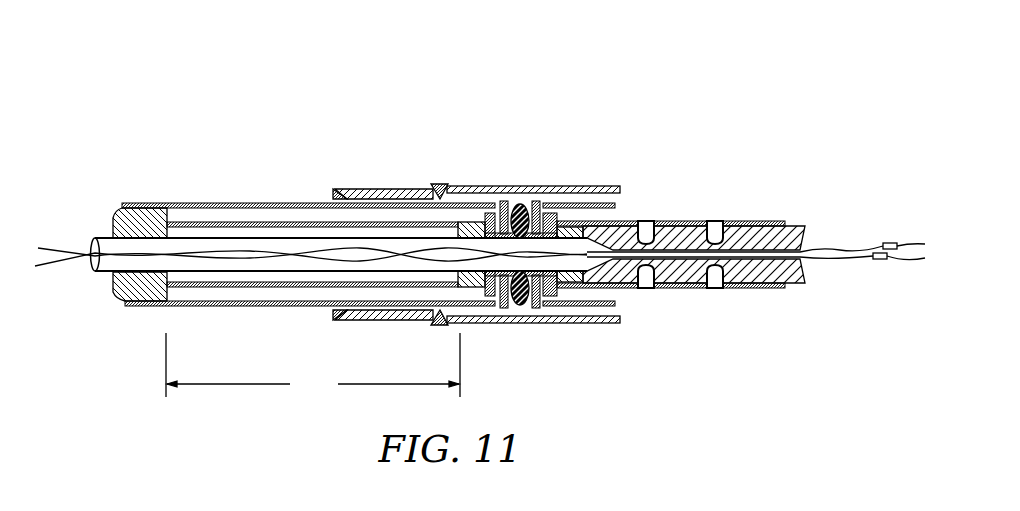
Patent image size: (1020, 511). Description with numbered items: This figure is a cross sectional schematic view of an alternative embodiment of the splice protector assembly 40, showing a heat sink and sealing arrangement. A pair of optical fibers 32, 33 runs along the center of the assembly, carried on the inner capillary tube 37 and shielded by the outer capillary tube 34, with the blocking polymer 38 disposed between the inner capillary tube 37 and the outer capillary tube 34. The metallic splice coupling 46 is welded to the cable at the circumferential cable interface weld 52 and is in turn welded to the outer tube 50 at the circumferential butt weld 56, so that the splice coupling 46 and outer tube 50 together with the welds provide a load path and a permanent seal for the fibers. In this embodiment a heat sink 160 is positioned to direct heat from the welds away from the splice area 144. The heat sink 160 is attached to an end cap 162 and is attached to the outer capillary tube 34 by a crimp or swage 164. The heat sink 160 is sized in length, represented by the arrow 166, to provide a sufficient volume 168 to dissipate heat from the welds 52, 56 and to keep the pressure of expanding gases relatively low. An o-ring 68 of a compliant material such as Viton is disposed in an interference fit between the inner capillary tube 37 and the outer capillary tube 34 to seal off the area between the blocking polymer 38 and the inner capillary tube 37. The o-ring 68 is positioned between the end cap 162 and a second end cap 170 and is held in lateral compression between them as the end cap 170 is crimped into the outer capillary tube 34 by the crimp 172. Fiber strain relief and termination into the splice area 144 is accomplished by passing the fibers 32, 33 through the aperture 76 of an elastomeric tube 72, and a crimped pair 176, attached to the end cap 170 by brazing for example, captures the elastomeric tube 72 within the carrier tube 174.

The optical fiber 32 is at (63, 249).
The optical fiber 33 is at (47, 265).
The outer capillary tube 34 is at (167, 205).
The inner capillary tube 37 is at (100, 240).
The blocking polymer 38 is at (120, 206).
The splice protector assembly 40 is at (356, 108).
The splice coupling 46 is at (380, 190).
The outer tube 50 is at (578, 186).
The cable interface weld 52 is at (341, 189).
The butt weld 56 is at (440, 184).
The o-ring 68 is at (519, 205).
The elastomeric tube 72 is at (803, 268).
The aperture 76 is at (810, 248).
The splice area 144 is at (803, 190).
The heat sink 160 is at (307, 223).
The end cap 162 is at (522, 300).
The crimp or swage 164 is at (500, 302).
The arrow 166 is at (313, 365).
The volume 168 is at (227, 216).
The end cap 170 is at (570, 270).
The crimp 172 is at (545, 300).
The carrier tube 174 is at (740, 221).
The crimped pair 176 is at (647, 287).